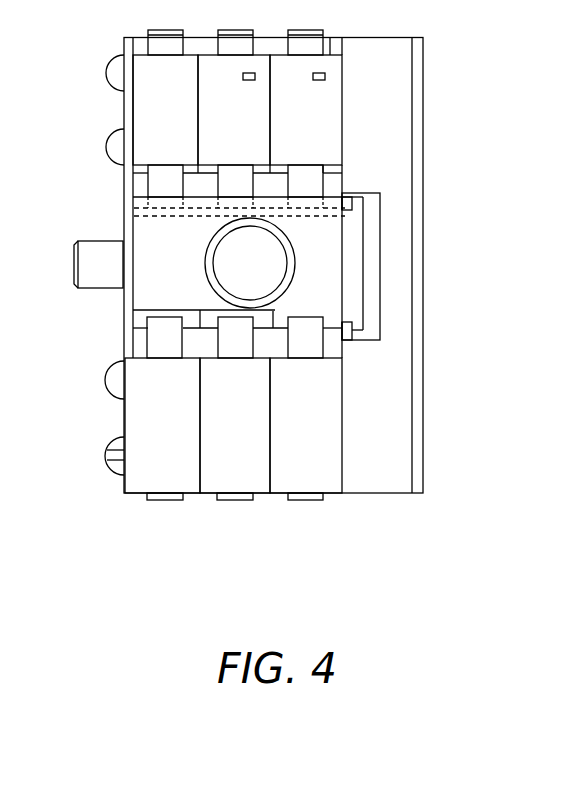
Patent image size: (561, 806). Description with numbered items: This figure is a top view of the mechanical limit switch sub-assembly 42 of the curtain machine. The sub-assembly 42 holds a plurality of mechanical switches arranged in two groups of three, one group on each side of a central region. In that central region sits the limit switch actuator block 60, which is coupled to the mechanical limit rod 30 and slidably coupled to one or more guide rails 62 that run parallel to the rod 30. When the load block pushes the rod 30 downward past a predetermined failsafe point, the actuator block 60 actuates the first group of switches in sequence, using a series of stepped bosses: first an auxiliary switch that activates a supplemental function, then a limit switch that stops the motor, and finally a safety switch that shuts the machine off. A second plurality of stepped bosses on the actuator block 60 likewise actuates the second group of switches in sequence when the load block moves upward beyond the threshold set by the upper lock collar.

The mechanical limit switch sub-assembly 42 is at (440, 74).
The limit switch actuator block 60 is at (353, 248).
The guide rail 62 is at (345, 202).
The mechanical limit rod 30 is at (288, 249).